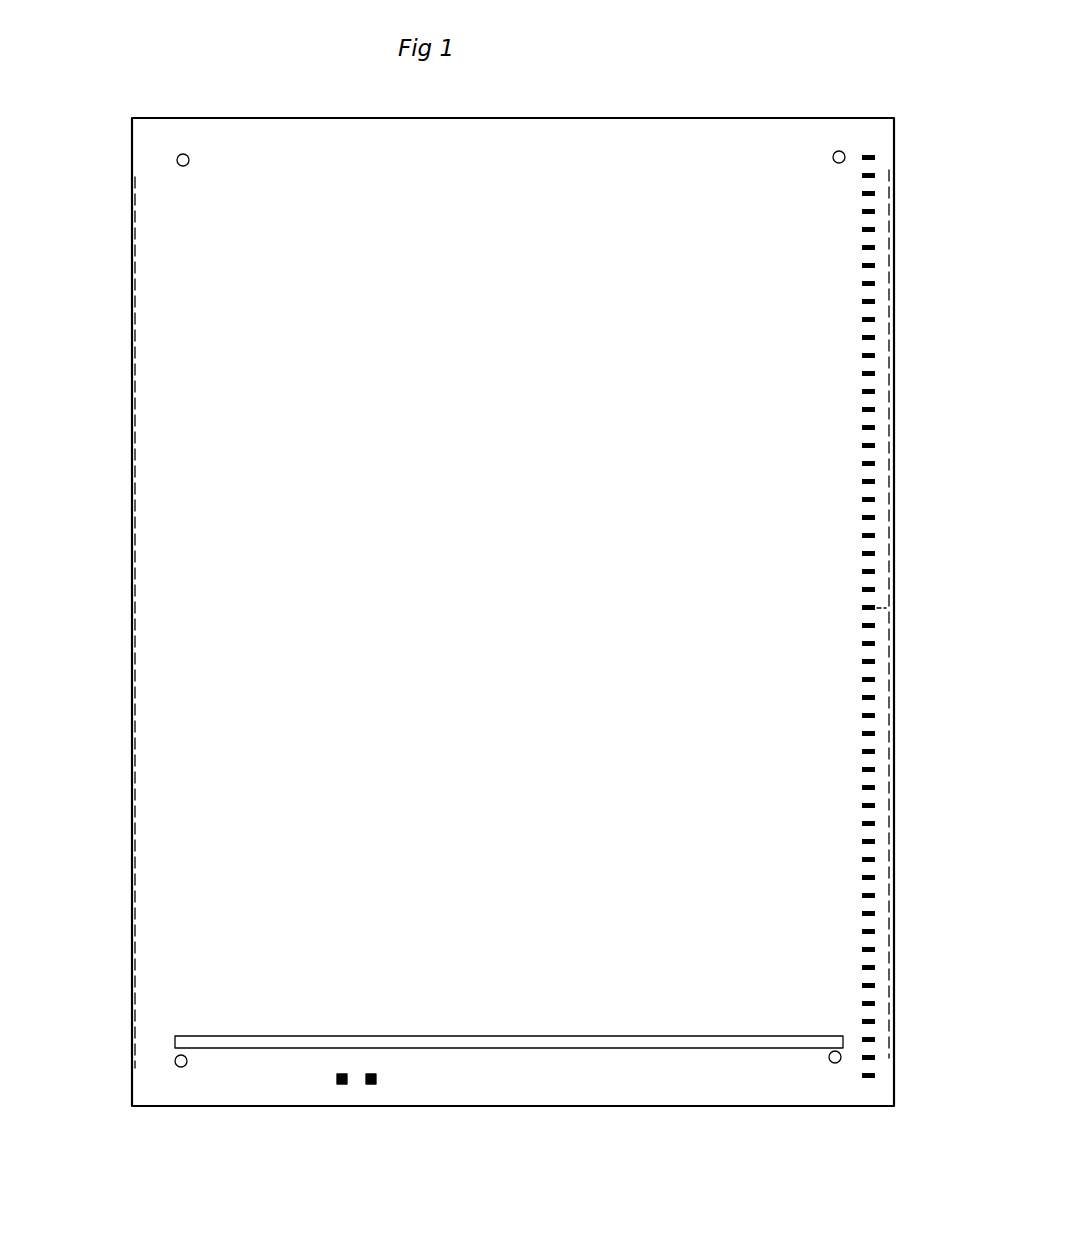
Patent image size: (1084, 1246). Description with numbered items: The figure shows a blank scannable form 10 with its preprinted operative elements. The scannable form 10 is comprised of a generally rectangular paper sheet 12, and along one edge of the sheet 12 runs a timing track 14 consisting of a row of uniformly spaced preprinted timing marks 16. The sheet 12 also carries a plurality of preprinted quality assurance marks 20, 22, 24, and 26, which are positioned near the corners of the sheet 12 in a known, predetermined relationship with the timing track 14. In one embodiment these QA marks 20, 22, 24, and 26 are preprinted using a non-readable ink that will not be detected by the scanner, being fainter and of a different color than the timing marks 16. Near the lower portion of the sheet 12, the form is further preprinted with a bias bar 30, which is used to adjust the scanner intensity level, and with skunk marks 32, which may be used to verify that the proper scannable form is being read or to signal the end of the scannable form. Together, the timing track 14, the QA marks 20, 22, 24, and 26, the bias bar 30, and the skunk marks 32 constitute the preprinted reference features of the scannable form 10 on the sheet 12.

The scannable form 10 is at (742, 70).
The paper sheet 12 is at (333, 118).
The timing track 14 is at (870, 187).
The timing marks 16 is at (876, 554).
The quality assurance mark 20 is at (177, 160).
The quality assurance mark 22 is at (845, 156).
The quality assurance mark 24 is at (175, 1062).
The quality assurance mark 26 is at (841, 1057).
The bias bar 30 is at (545, 1048).
The skunk marks 32 is at (371, 1086).